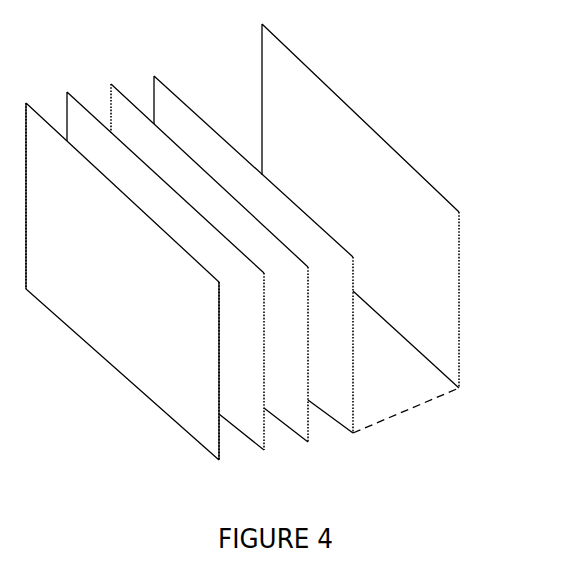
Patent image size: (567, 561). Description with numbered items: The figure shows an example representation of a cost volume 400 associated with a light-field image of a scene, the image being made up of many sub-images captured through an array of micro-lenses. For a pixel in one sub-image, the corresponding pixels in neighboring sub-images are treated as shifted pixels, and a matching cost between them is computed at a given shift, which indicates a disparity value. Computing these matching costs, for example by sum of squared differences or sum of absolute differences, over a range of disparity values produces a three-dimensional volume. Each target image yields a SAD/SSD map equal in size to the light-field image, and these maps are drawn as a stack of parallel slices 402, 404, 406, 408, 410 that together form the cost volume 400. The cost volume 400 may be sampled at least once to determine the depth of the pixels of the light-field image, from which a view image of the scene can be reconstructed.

The cost volume 400 is at (282, 262).
The slice of the cost volume 402 is at (219, 460).
The slice of the cost volume 404 is at (264, 450).
The slice of the cost volume 406 is at (308, 442).
The slice of the cost volume 408 is at (225, 139).
The slice of the cost volume 410 is at (459, 248).